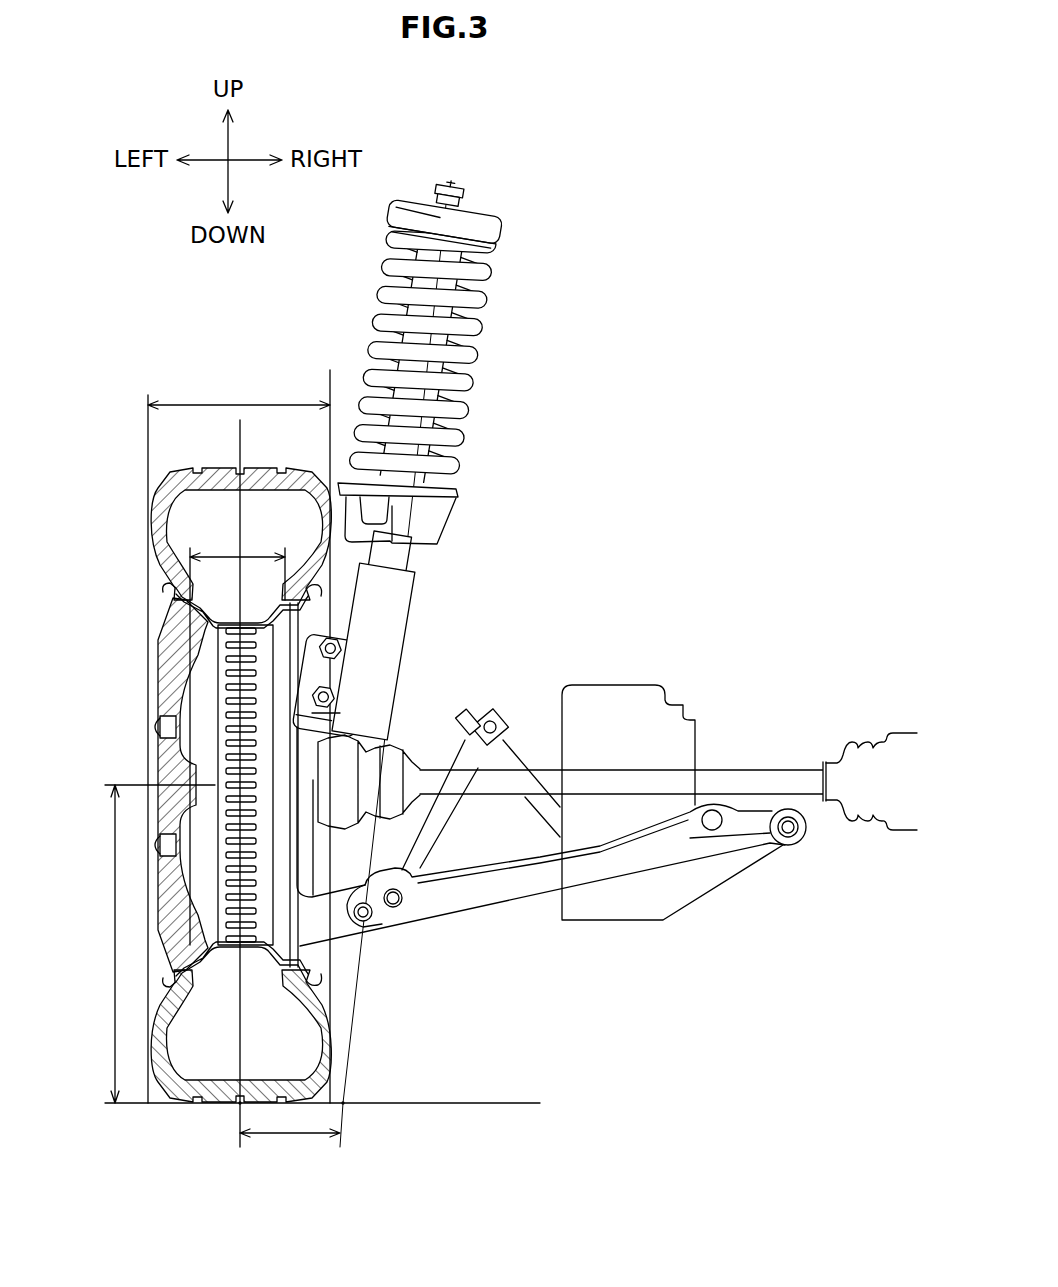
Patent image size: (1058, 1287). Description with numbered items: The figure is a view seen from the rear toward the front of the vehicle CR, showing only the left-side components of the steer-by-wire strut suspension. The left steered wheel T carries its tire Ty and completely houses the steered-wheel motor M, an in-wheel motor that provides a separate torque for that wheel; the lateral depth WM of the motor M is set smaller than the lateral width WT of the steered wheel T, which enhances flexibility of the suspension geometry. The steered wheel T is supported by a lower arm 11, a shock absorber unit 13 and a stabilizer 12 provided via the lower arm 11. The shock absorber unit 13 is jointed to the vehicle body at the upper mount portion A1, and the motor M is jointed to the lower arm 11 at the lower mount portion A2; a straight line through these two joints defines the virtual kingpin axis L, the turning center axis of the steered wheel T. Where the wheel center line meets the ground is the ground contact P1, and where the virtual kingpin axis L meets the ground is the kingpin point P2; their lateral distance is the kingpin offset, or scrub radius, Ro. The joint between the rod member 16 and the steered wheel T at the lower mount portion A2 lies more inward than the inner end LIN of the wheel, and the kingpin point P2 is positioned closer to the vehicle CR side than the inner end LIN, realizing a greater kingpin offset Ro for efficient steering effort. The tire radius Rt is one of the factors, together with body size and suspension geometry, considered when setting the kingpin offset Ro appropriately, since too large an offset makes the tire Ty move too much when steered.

The lower arm 11 is at (553, 910).
The stabilizer 12 is at (437, 817).
The shock absorber unit 13 is at (470, 345).
The rod member 16 is at (745, 768).
The upper mount portion A1 is at (448, 190).
The lower mount portion A2 is at (372, 922).
The vehicle CR is at (722, 187).
The virtual kingpin axis L is at (385, 735).
The inner end of steered wheel LIN is at (327, 721).
The steered wheel T is at (118, 446).
The tire Ty is at (152, 505).
The wheel rim H is at (165, 650).
The steered-wheel motor M is at (200, 680).
The distance of steered wheel in lateral direction WT is at (239, 391).
The distance (depth) of motor in lateral direction WM is at (237, 544).
The tire radius Rt is at (102, 944).
The kingpin offset (scrub radius) Ro is at (290, 1149).
The ground contact of center line of steered wheel P1 is at (238, 1108).
The kingpin point P2 is at (344, 1107).